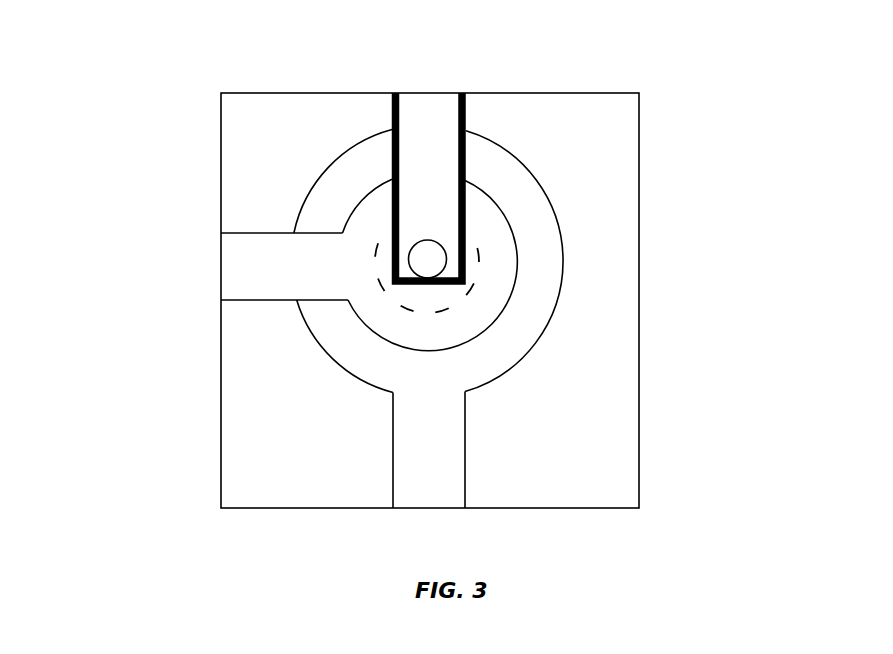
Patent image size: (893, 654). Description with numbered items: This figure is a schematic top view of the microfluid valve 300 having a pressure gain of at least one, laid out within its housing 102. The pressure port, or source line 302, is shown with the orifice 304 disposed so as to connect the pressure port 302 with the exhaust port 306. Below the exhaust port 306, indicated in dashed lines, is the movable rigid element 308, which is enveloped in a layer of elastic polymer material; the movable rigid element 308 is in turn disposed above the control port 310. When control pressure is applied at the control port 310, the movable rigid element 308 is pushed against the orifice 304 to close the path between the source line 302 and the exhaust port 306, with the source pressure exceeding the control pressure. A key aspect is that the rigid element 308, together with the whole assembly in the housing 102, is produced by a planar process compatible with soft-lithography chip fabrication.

The housing 102 is at (652, 122).
The microfluid valve 300 is at (105, 132).
The pressure port (source line) 302 is at (467, 104).
The orifice 304 is at (443, 244).
The exhaust port 306 is at (247, 233).
The movable rigid element 308 is at (478, 258).
The control port 310 is at (465, 427).